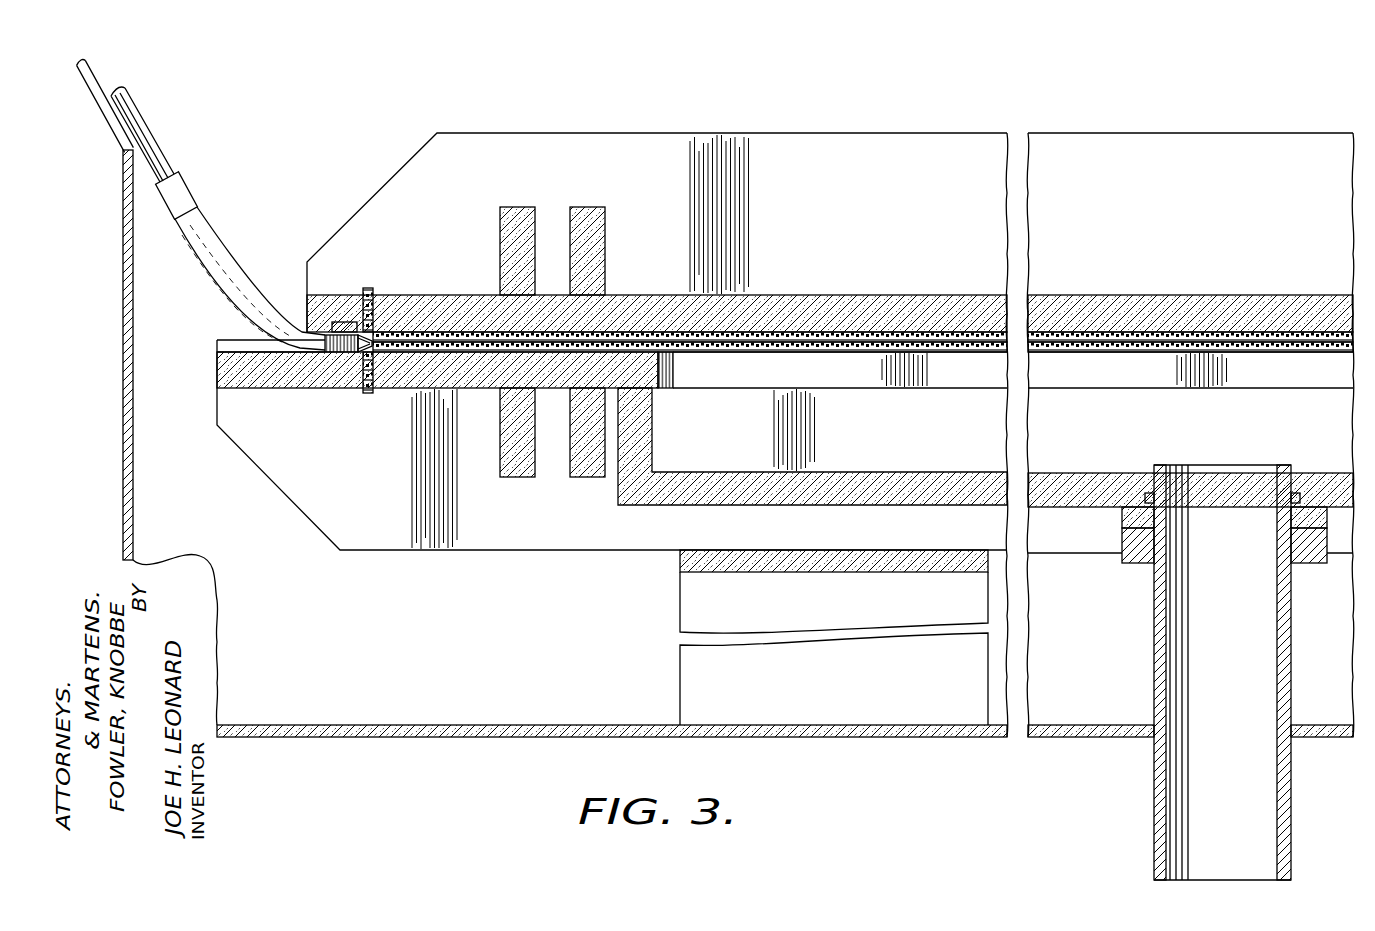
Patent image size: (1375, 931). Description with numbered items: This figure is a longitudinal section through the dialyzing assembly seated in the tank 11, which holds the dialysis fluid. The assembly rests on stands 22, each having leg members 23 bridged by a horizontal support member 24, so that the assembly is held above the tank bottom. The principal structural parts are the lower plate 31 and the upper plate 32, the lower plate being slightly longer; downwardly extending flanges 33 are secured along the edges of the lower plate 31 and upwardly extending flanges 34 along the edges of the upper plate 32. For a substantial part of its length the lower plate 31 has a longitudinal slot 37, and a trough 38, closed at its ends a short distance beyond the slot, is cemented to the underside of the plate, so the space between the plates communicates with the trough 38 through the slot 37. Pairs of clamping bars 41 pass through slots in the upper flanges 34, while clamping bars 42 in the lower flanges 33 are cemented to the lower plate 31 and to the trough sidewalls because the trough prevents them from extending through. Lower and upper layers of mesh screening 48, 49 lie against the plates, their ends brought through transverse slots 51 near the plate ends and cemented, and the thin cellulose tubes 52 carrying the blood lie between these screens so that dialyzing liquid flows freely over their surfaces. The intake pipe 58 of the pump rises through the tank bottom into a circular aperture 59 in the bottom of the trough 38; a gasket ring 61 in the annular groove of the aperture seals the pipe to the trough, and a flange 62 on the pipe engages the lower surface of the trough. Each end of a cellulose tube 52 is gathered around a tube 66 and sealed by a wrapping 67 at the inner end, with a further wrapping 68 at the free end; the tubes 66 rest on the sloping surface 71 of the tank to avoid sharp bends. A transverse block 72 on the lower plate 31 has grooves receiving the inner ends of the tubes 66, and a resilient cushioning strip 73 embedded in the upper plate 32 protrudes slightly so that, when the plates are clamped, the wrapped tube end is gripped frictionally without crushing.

The tank 11 is at (442, 734).
The stand 22 is at (672, 611).
The leg member 23 is at (680, 682).
The horizontal support member 24 is at (680, 571).
The lower plate 31 is at (486, 390).
The upper plate 32 is at (672, 300).
The downwardly extending flange 33 is at (268, 468).
The upwardly extending flange 34 is at (391, 183).
The slot 37 is at (668, 379).
The trough 38 is at (620, 498).
The clamping bar 41 is at (586, 206).
The clamping bar 42 is at (585, 479).
The lower layer of mesh screening material 48 is at (396, 352).
The upper layer of mesh screening material 49 is at (436, 336).
The transverse slot 51 is at (368, 290).
The cellulose tube 52 is at (210, 232).
The intake pipe 58 is at (1153, 804).
The aperture 59 is at (1296, 521).
The gasket ring 61 is at (1149, 492).
The flange 62 is at (1126, 561).
The tube 66 is at (142, 118).
The wrapping 67 is at (331, 354).
The wrapping 68 is at (184, 186).
The sloping surface 71 is at (88, 72).
The block 72 is at (230, 344).
The strip of resilient cushioning material 73 is at (344, 322).